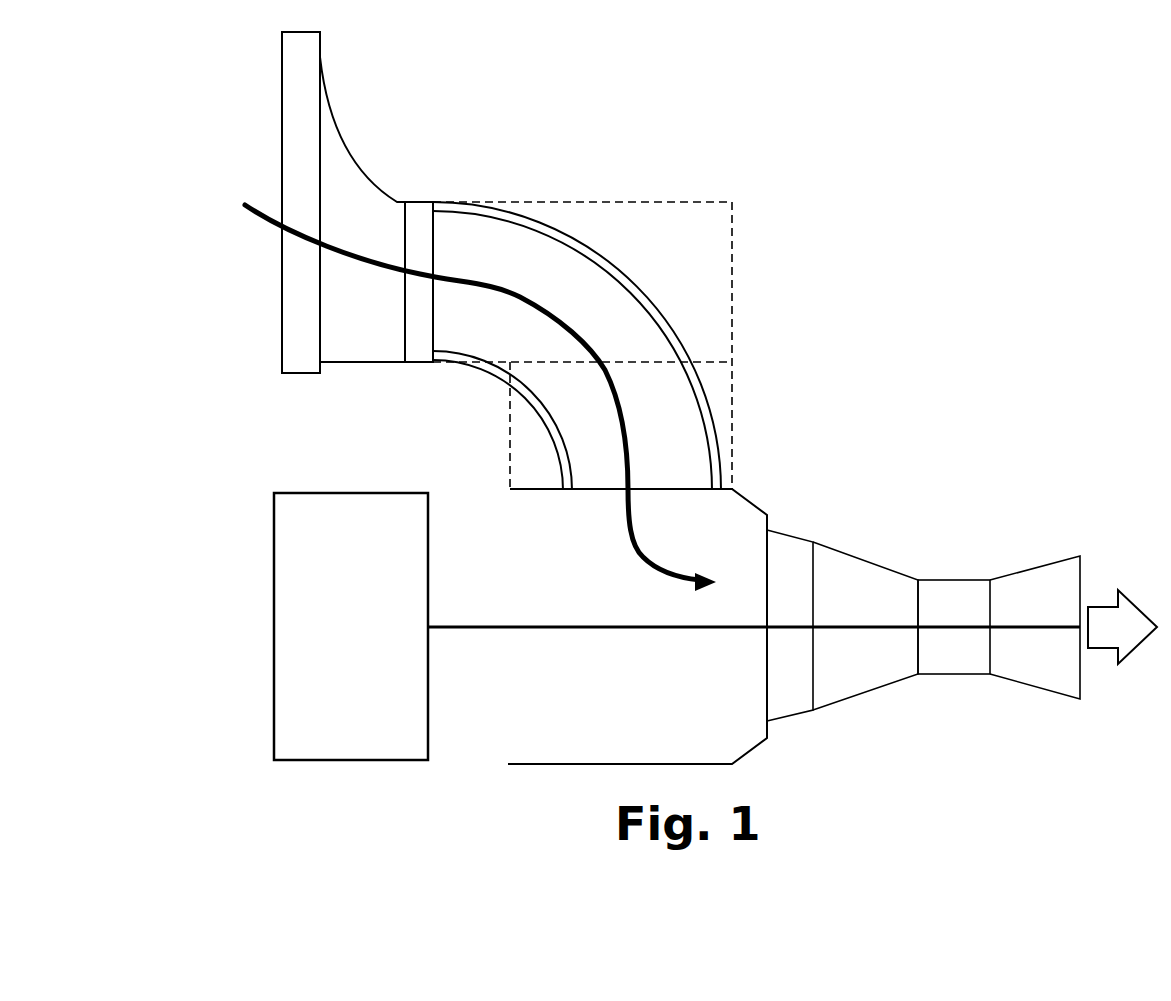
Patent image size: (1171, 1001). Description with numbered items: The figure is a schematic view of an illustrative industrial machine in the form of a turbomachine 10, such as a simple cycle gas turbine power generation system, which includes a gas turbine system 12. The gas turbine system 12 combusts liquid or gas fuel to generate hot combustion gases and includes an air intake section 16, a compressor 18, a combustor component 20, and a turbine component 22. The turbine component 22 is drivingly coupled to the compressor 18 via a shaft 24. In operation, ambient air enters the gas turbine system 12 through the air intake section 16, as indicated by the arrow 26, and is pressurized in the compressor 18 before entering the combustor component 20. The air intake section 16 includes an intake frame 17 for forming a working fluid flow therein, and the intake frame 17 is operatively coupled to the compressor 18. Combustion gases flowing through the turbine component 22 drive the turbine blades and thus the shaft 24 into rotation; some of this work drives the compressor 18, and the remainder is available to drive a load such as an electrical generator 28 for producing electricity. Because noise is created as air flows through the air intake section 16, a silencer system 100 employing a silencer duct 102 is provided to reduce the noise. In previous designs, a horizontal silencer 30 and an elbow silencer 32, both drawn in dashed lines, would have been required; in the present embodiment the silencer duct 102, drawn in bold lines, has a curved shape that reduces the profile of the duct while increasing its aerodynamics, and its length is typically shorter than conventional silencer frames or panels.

The turbomachine 10 is at (842, 240).
The gas turbine system 12 is at (959, 688).
The air intake section 16 is at (494, 432).
The intake frame 17 is at (368, 362).
The compressor 18 is at (884, 616).
The combustor component 20 is at (971, 616).
The turbine component 22 is at (1052, 616).
The shaft 24 is at (624, 630).
The arrow 26 is at (572, 327).
The electrical generator 28 is at (274, 626).
The horizontal silencer 30 is at (735, 238).
The elbow silencer 32 is at (735, 415).
The silencer system 100 is at (420, 230).
The silencer duct 102 is at (507, 235).